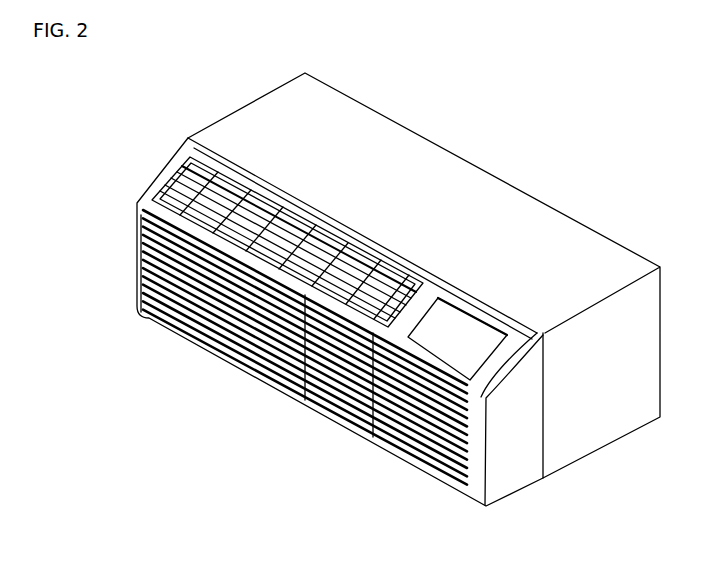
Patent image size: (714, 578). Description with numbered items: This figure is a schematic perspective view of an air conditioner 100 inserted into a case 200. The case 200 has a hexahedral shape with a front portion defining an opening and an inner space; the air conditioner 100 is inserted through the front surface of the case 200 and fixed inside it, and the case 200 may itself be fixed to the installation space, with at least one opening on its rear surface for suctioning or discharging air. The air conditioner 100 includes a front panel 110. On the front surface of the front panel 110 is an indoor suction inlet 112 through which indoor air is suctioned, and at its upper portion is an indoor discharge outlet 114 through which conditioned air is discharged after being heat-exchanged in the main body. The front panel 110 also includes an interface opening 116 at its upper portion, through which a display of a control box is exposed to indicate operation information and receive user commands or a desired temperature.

The air conditioner 100 is at (108, 177).
The front panel 110 is at (493, 488).
The indoor suction inlet 112 is at (175, 305).
The indoor discharge outlet 114 is at (181, 188).
The interface opening 116 is at (450, 348).
The case 200 is at (510, 160).